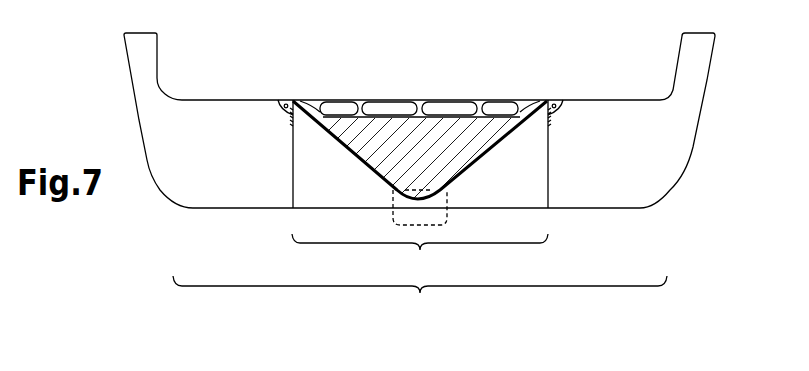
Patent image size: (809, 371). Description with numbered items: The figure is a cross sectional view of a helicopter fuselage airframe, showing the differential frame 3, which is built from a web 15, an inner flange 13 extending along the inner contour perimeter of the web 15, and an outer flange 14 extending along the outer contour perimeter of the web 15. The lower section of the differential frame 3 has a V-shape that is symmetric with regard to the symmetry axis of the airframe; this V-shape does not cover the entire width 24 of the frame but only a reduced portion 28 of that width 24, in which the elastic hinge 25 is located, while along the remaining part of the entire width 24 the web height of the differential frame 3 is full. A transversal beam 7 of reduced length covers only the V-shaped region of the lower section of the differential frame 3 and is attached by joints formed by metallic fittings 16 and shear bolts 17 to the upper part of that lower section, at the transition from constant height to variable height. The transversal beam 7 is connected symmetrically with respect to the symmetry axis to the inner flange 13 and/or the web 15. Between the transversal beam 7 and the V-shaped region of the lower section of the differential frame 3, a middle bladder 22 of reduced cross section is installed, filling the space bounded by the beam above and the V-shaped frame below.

The differential frame 3 is at (709, 67).
The transversal beam 7 is at (400, 99).
The inner flange 13 is at (636, 99).
The outer flange 14 is at (698, 147).
The web 15 is at (607, 175).
The metallic fittings 16 is at (277, 99).
The shear bolts 17 is at (553, 99).
The middle bladder 22 is at (470, 137).
The width 24 is at (420, 302).
The elastic hinge 25 is at (457, 193).
The reduced portion 28 is at (420, 259).